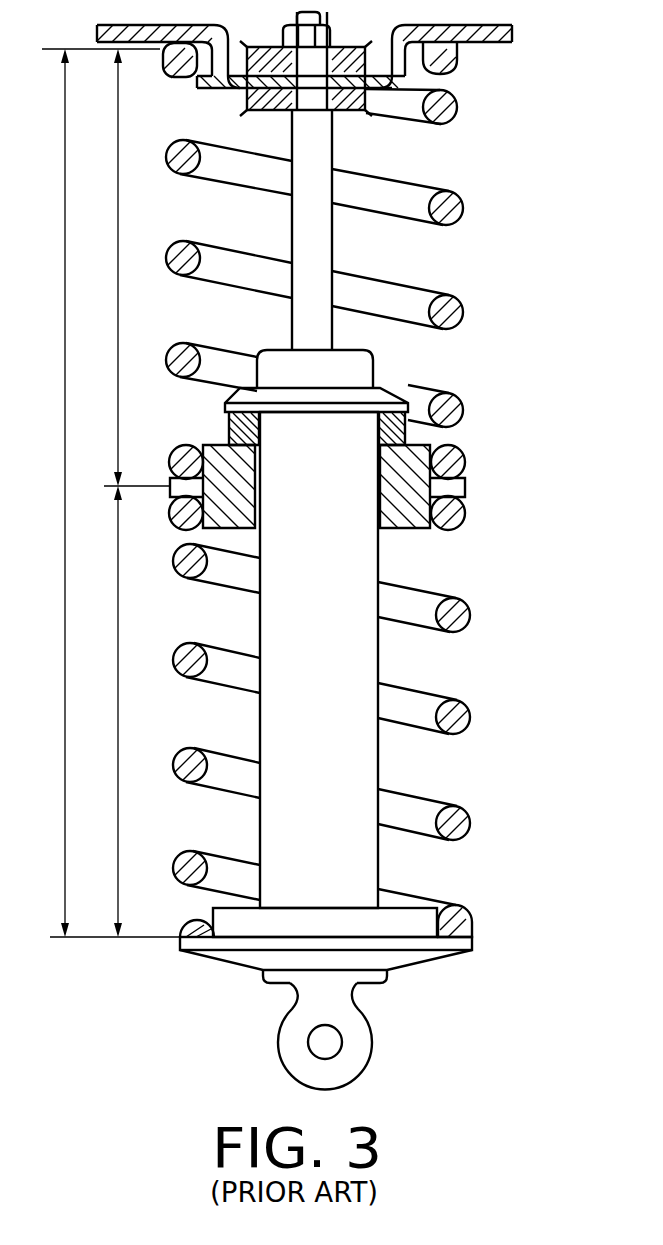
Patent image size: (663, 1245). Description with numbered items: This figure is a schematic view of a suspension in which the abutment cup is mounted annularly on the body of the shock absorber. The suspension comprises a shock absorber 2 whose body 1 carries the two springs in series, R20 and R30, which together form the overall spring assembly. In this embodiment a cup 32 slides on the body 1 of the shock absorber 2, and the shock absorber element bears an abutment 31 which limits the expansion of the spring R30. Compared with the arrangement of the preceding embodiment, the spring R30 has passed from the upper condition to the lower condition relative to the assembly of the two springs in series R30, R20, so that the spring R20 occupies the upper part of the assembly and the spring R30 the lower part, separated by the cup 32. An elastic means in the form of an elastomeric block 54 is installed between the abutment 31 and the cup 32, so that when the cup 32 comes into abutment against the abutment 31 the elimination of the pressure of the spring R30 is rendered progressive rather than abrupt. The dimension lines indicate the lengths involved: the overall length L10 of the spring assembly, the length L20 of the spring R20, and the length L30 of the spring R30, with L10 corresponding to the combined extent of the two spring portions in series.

The body of the shock absorber 1 is at (350, 680).
The shock absorber 2 is at (408, 957).
The bearing or abutment 31 is at (408, 404).
The cup 32 is at (413, 521).
The elastomeric block 54 is at (406, 436).
The portion of spring R10 R20 is at (452, 310).
The portion of spring R10 R30 is at (460, 728).
The length of spring R10 L10 is at (100, 493).
The length of spring R20 L20 is at (119, 267).
The length of spring R30 L30 is at (96, 711).